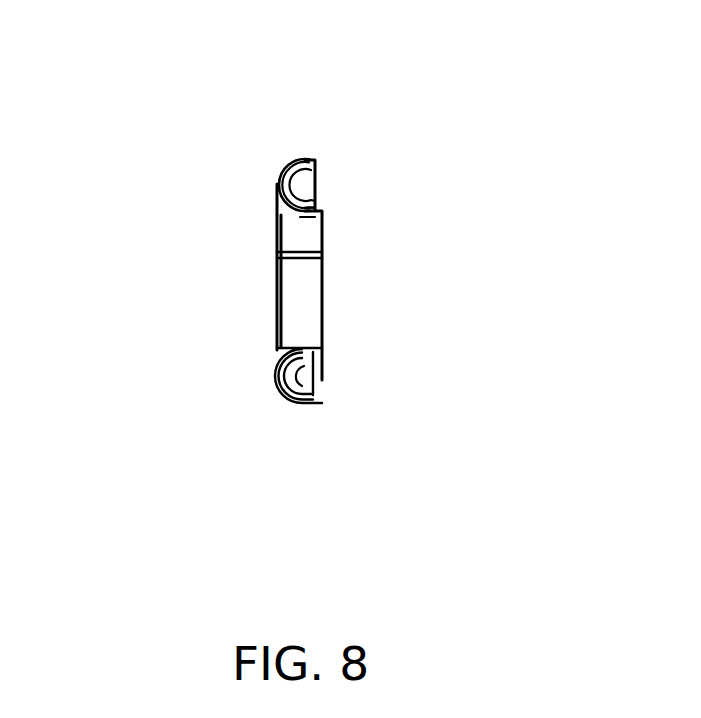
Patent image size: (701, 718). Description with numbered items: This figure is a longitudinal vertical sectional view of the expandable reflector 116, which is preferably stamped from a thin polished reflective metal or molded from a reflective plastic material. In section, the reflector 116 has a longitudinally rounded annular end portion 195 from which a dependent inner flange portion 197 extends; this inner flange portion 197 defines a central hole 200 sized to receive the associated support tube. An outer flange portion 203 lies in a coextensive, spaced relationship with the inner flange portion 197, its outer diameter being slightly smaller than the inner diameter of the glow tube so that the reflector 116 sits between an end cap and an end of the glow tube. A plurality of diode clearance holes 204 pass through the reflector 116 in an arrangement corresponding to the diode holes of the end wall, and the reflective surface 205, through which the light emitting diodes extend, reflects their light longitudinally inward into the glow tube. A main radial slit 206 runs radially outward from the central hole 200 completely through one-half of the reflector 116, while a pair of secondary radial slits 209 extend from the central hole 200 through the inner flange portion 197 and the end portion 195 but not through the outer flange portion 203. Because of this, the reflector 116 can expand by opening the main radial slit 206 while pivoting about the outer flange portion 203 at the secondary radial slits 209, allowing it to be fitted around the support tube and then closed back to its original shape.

The expandable reflector 116 is at (390, 167).
The longitudinally rounded annular end portion 195 is at (277, 227).
The inner flange portion 197 is at (318, 208).
The central hole 200 is at (313, 220).
The outer flange portion 203 is at (307, 158).
The diode clearance holes 204 is at (277, 175).
The reflective surface 205 is at (303, 385).
The main radial slit 206 is at (292, 407).
The secondary radial slits 209 is at (310, 260).